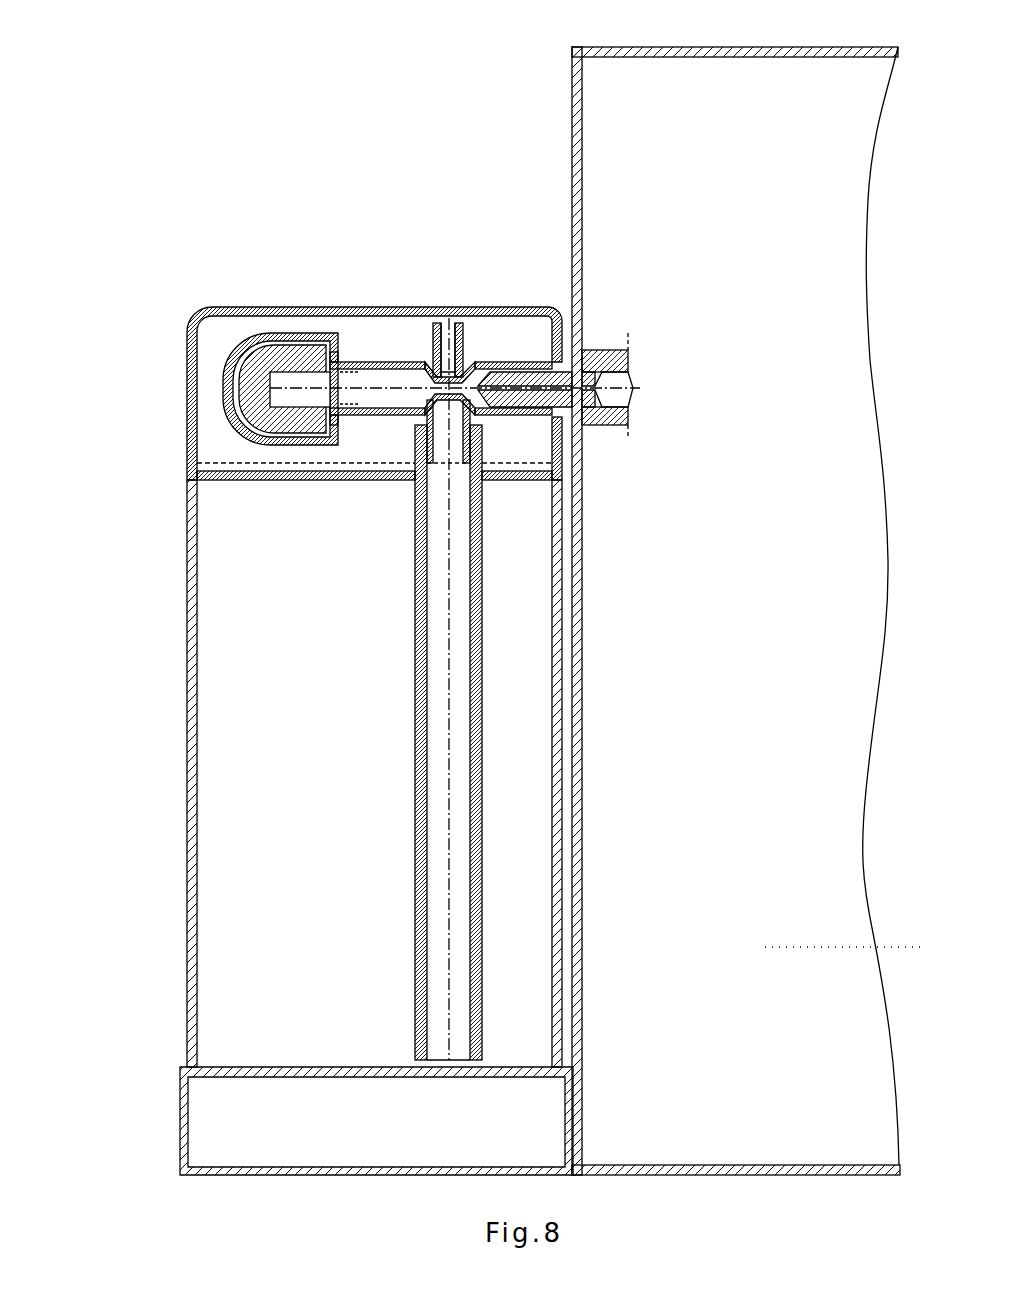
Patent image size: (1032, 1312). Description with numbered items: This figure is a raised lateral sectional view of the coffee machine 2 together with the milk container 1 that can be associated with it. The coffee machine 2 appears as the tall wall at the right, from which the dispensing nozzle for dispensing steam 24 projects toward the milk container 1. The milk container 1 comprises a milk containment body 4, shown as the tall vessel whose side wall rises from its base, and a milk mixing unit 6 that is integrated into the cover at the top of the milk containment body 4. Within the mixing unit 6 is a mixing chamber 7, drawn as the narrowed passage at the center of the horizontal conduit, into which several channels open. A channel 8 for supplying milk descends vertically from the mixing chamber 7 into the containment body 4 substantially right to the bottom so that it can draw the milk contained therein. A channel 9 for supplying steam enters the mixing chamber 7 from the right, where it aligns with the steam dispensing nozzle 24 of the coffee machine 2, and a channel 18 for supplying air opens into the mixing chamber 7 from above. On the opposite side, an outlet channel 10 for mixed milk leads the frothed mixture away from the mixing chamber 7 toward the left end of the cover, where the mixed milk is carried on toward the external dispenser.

The milk container 1 is at (170, 962).
The coffee machine 2 is at (540, 73).
The milk containment body 4 is at (198, 700).
The milk mixing unit 6 is at (397, 365).
The mixing chamber 7 is at (412, 365).
The channel for supplying milk 8 is at (450, 464).
The channel for supplying steam 9 is at (487, 365).
The outlet channel for mixed milk 10 is at (370, 376).
The channel for supplying air 18 is at (447, 367).
The dispensing nozzle for dispensing steam 24 is at (520, 420).